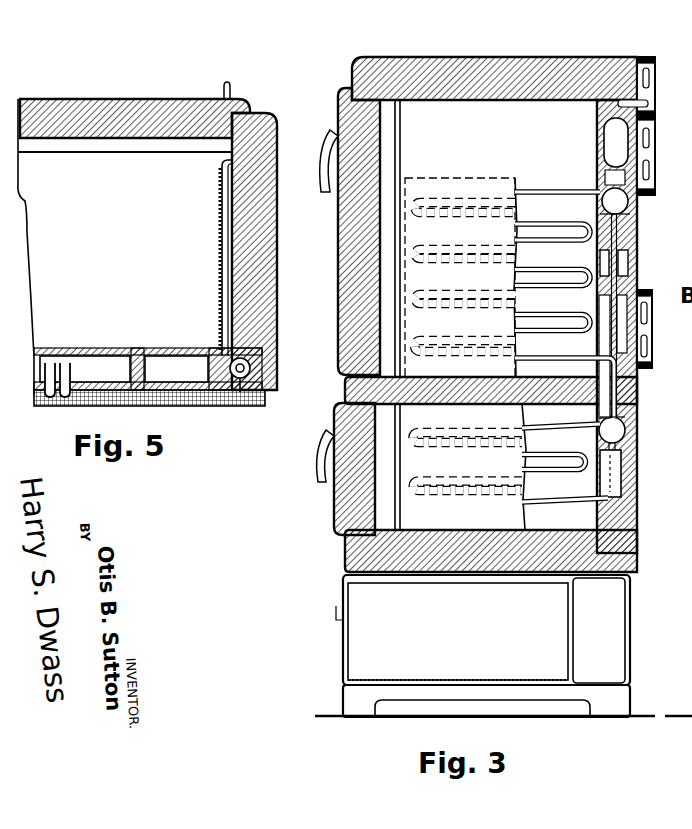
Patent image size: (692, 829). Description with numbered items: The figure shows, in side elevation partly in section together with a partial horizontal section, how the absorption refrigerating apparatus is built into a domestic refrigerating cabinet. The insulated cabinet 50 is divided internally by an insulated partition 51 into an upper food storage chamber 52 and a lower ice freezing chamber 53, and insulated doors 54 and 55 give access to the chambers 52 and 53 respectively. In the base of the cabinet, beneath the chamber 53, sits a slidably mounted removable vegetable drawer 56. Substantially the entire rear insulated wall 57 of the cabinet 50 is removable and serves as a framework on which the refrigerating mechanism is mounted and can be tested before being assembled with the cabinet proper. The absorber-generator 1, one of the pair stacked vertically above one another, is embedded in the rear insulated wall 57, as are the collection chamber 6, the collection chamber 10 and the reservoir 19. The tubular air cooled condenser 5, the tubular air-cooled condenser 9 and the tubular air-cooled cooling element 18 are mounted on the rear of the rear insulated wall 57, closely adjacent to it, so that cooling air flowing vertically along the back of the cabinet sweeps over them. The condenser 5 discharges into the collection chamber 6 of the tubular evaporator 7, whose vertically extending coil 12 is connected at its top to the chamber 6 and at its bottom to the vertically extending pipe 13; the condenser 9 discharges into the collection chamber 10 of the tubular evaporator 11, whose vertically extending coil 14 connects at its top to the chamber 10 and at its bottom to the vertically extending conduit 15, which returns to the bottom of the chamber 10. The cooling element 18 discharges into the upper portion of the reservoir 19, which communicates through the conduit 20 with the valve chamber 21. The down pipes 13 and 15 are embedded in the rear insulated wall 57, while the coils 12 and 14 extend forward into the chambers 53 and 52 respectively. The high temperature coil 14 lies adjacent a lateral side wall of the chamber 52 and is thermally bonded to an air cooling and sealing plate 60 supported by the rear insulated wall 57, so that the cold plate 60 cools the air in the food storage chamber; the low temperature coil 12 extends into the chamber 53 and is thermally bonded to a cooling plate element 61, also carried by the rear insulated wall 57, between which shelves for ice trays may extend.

In FIG. 3, the absorber-generator 1 is at (597, 372).
In FIG. 3, the tubular air cooled condenser 5 is at (653, 330).
In FIG. 3, the collection chamber 6 is at (628, 419).
In FIG. 3, the tubular evaporator 7 is at (560, 508).
In FIG. 3, the tubular air-cooled condenser 9 is at (656, 146).
In FIG. 5, the collection chamber 10 is at (176, 369).
In FIG. 3, the collection chamber 10 is at (613, 303).
In FIG. 3, the tubular evaporator 11 is at (550, 268).
In FIG. 3, the vertically extending coil 12 is at (630, 266).
In FIG. 3, the vertically extending pipe 13 is at (623, 484).
In FIG. 5, the vertically extending coil 14 is at (221, 222).
In FIG. 3, the vertically extending coil 14 is at (541, 221).
In FIG. 3, the vertically extending conduit 15 is at (639, 224).
In FIG. 5, the tubular air-cooled cooling element 18 is at (207, 404).
In FIG. 3, the tubular air-cooled cooling element 18 is at (657, 80).
In FIG. 5, the reservoir 19 is at (85, 369).
In FIG. 3, the reservoir 19 is at (616, 142).
In FIG. 3, the conduit 20 is at (601, 170).
In FIG. 3, the valve chamber 21 is at (590, 452).
In FIG. 5, the insulated cabinet 50 is at (279, 233).
In FIG. 3, the insulated cabinet 50 is at (470, 57).
In FIG. 3, the insulated partition 51 is at (504, 376).
In FIG. 5, the upper food storage chamber 52 is at (70, 247).
In FIG. 3, the upper food storage chamber 52 is at (516, 326).
In FIG. 3, the lower ice freezing chamber 53 is at (491, 488).
In FIG. 5, the insulated door 54 is at (143, 99).
In FIG. 3, the insulated door 54 is at (338, 268).
In FIG. 3, the insulated door 55 is at (334, 498).
In FIG. 3, the vegetable drawer 56 is at (503, 646).
In FIG. 5, the rear insulated wall 57 is at (152, 348).
In FIG. 3, the rear insulated wall 57 is at (639, 395).
In FIG. 5, the air cooling and sealing plate 60 is at (219, 302).
In FIG. 3, the air cooling and sealing plate 60 is at (509, 298).
In FIG. 3, the cooling plate element 61 is at (506, 467).